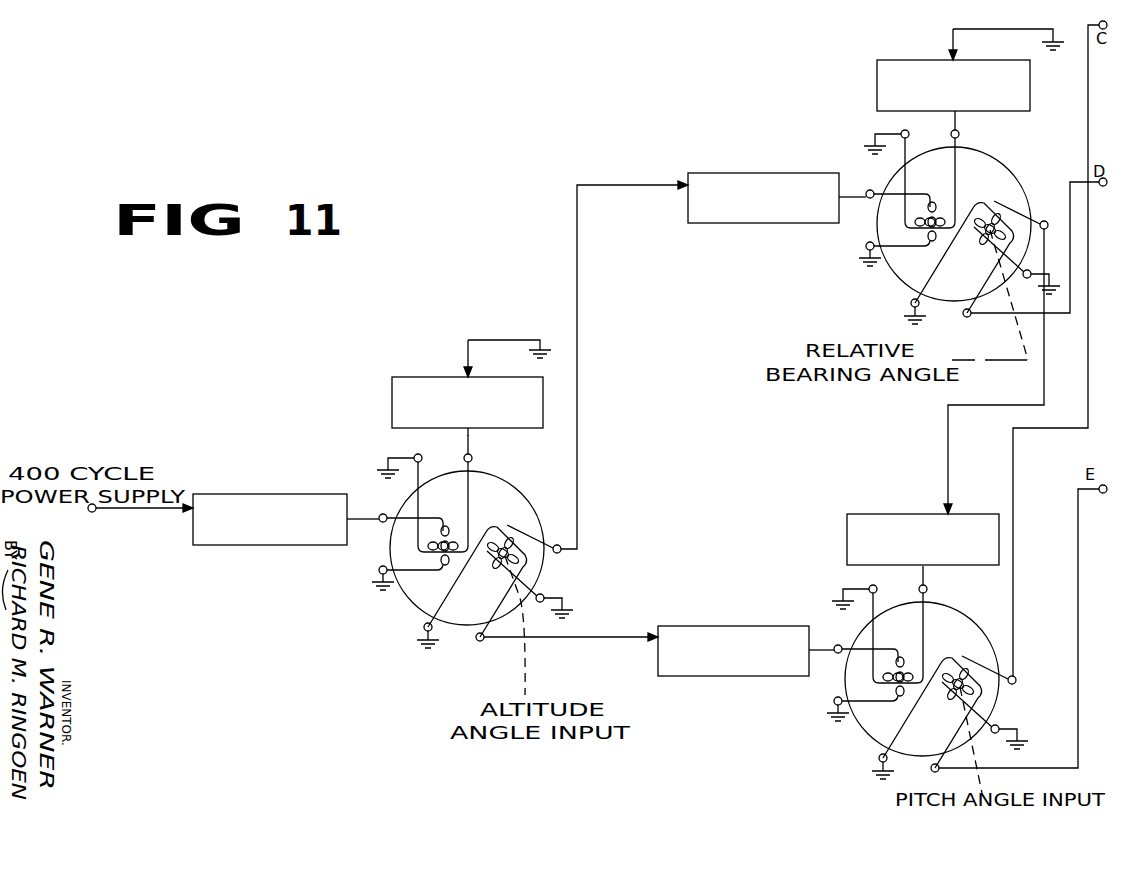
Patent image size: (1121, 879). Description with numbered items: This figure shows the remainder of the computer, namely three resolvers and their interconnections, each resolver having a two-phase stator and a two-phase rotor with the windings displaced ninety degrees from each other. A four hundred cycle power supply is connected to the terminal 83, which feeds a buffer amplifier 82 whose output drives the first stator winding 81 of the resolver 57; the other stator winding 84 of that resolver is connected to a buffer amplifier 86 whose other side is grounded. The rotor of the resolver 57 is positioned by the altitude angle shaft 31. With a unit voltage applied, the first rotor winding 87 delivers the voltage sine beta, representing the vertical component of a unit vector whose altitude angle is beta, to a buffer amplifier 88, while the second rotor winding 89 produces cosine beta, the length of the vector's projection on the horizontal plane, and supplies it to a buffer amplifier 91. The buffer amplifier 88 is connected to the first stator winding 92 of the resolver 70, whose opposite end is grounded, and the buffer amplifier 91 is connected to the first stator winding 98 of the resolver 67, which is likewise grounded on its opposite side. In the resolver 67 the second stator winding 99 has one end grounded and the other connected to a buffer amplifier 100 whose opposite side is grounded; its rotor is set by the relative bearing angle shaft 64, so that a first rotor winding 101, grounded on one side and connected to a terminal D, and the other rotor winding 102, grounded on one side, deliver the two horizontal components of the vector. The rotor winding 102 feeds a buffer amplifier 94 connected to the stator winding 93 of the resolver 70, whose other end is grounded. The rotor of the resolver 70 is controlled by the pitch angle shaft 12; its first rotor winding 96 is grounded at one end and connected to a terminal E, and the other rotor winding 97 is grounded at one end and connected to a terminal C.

The pitch angle shaft 12 is at (984, 781).
The altitude angle shaft 31 is at (526, 663).
The resolver 57 is at (328, 641).
The relative bearing angle shaft 64 is at (1000, 362).
The resolver 67 is at (783, 126).
The resolver 70 is at (764, 569).
The first stator winding 81 is at (433, 571).
The buffer amplifier 82 is at (284, 495).
The terminal 83 is at (92, 513).
The stator winding 84 is at (439, 527).
The buffer amplifier 86 is at (408, 378).
The first rotor winding 87 is at (495, 575).
The buffer amplifier 88 is at (725, 628).
The second rotor winding 89 is at (490, 567).
The buffer amplifier 91 is at (705, 178).
The first stator winding 92 is at (888, 702).
The stator winding 93 is at (894, 658).
The buffer amplifier 94 is at (897, 516).
The first rotor winding 96 is at (952, 706).
The rotor winding 97 is at (945, 698).
The first stator winding 98 is at (920, 247).
The second stator winding 99 is at (926, 203).
The buffer amplifier 100 is at (895, 54).
The first rotor winding 101 is at (979, 253).
The rotor winding 102 is at (977, 243).